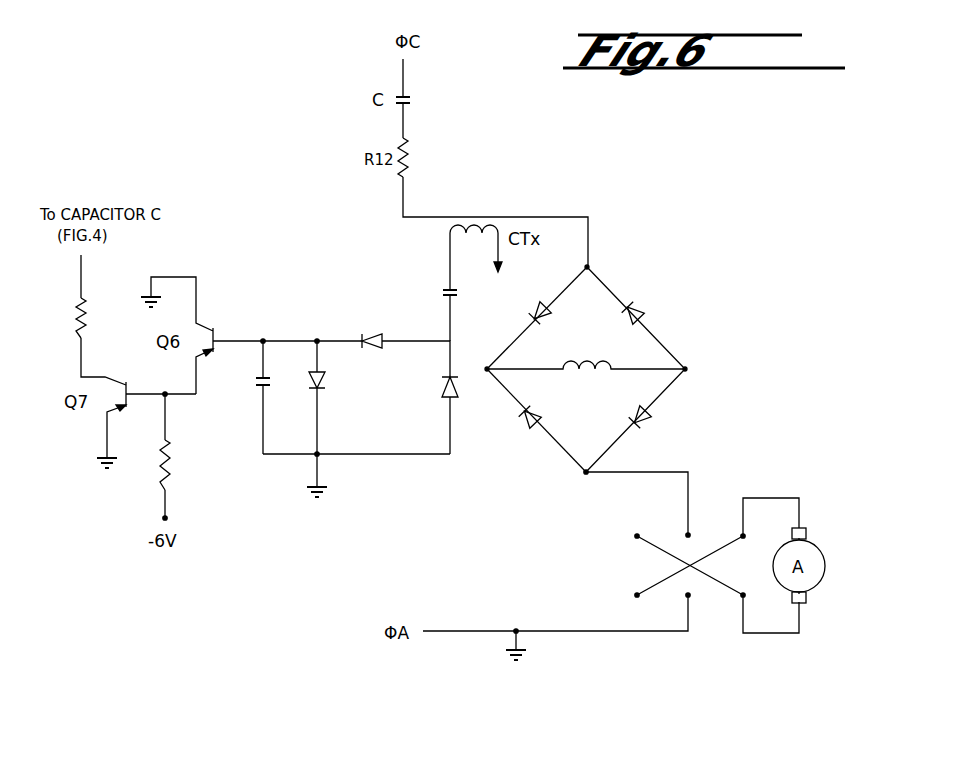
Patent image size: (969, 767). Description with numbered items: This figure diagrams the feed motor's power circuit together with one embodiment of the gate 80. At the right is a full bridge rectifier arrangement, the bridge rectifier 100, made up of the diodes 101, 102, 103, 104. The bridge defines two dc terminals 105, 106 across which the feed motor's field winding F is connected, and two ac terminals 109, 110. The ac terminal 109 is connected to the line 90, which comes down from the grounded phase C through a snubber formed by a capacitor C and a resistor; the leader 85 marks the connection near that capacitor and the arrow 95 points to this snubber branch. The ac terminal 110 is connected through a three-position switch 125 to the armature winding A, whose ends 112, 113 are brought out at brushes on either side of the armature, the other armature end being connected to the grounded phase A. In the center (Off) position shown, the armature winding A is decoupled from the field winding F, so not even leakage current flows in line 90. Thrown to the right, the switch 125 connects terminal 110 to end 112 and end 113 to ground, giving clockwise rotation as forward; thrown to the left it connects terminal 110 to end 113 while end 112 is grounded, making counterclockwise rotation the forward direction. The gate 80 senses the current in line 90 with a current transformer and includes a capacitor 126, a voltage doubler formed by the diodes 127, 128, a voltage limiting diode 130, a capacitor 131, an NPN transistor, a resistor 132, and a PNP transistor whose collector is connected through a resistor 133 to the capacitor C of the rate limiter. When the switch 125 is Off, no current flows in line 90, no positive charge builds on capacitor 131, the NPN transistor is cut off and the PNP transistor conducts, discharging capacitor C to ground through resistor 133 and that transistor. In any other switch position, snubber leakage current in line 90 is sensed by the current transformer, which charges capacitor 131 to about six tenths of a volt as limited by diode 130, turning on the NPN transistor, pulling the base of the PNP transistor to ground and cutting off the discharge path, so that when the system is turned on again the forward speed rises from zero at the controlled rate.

The gate 80 is at (306, 306).
The capacitor C connection 85 is at (405, 76).
The line 90 is at (427, 217).
The resistor R12 95 is at (455, 133).
The bridge rectifier 100 is at (606, 395).
The diode 101 is at (541, 305).
The diode 102 is at (521, 440).
The diode 103 is at (652, 427).
The diode 104 is at (648, 312).
The dc terminal 105 is at (487, 366).
The dc terminal 106 is at (687, 371).
The ac terminal 109 is at (589, 268).
The ac terminal 110 is at (587, 475).
The end of armature winding 112 is at (806, 533).
The end of armature winding 113 is at (806, 600).
The 3-position switch 125 is at (650, 562).
The capacitor 126 is at (442, 292).
The diode 127 is at (371, 334).
The diode 128 is at (441, 389).
The voltage limiting diode 130 is at (320, 383).
The capacitor 131 is at (256, 385).
The resistor 132 is at (170, 466).
The resistor 133 is at (84, 336).